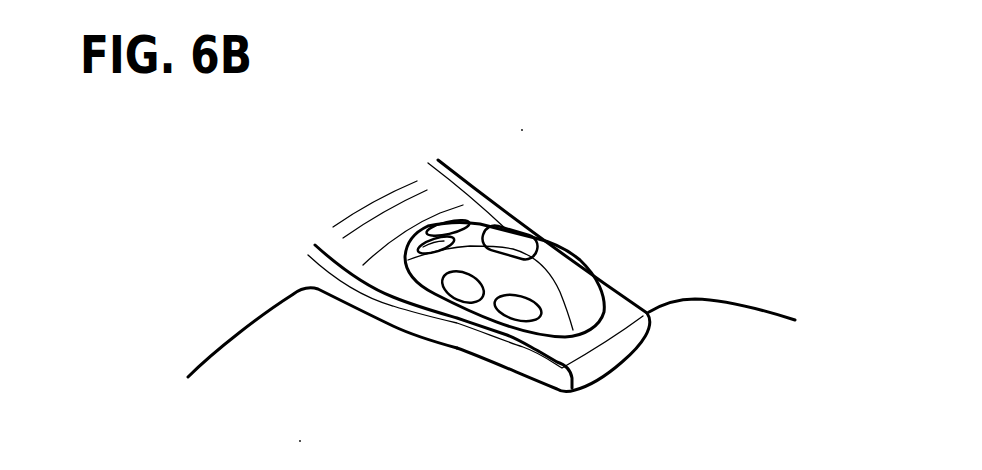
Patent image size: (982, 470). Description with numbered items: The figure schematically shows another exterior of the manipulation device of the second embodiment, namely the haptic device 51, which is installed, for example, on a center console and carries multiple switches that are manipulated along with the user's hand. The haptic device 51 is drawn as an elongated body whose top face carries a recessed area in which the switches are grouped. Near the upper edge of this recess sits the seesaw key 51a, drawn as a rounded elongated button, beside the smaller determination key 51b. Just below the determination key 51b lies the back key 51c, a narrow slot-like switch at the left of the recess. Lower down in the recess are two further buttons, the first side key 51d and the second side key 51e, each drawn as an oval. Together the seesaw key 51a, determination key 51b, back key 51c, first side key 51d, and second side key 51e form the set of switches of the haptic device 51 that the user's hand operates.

The haptic device 51 is at (567, 172).
The seesaw key 51a is at (513, 237).
The determination key 51b is at (455, 222).
The back key 51c is at (420, 255).
The first side key 51d is at (463, 288).
The second side key 51e is at (518, 313).